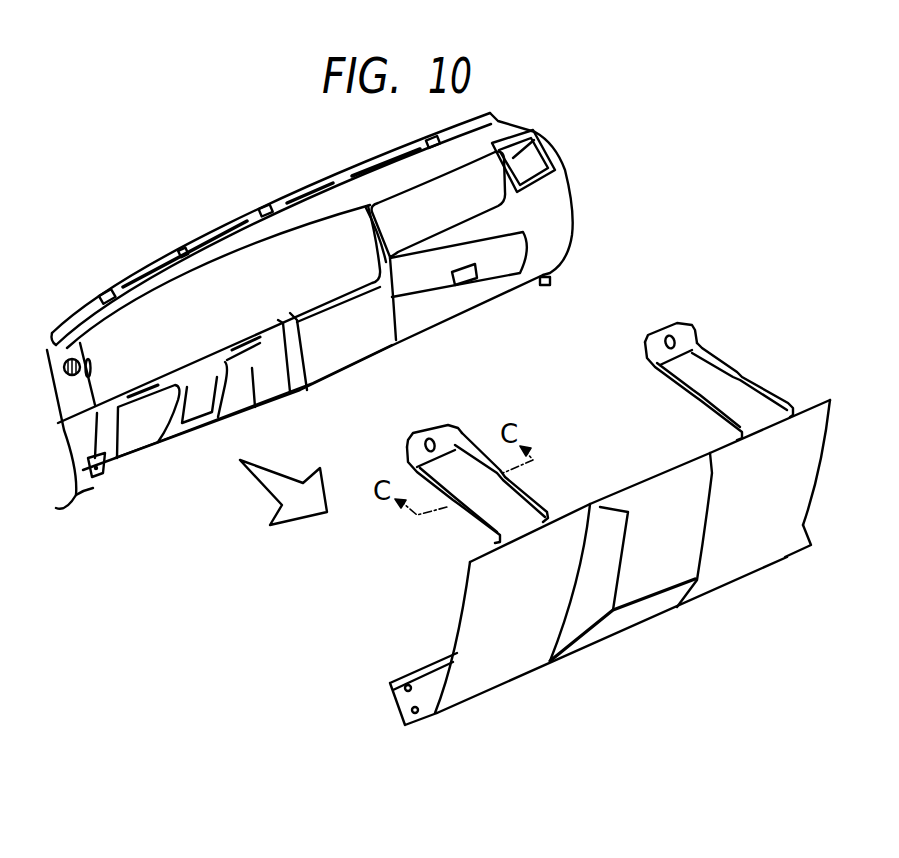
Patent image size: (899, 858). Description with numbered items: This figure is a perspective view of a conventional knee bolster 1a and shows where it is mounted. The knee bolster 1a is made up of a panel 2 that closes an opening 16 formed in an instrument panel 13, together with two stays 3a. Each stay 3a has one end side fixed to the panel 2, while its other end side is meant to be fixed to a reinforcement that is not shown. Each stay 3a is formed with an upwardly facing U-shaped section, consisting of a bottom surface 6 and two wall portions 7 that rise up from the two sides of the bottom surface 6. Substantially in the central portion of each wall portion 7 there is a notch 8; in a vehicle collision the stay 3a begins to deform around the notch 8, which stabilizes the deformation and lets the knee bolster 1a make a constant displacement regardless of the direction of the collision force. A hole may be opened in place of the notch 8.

The knee bolster 1a is at (573, 454).
The panel 2 is at (728, 567).
The stay 3a is at (573, 454).
The bottom surface 6 is at (503, 506).
The wall portion 7 is at (407, 458).
The notch 8 is at (450, 512).
The instrument panel 13 is at (392, 175).
The opening 16 is at (253, 365).